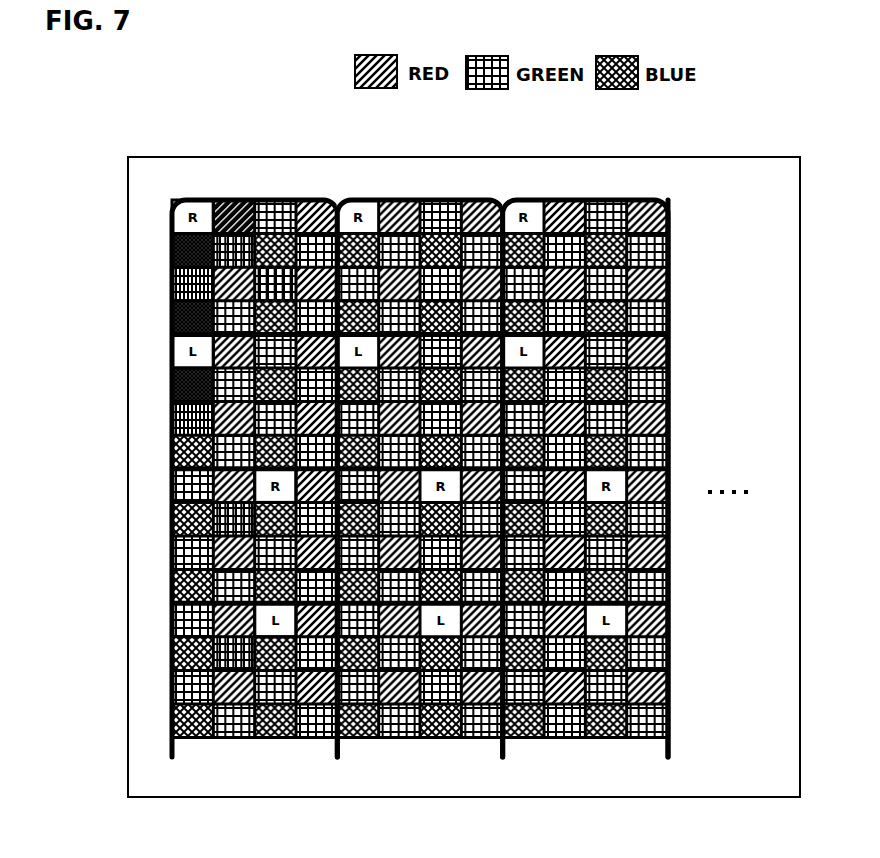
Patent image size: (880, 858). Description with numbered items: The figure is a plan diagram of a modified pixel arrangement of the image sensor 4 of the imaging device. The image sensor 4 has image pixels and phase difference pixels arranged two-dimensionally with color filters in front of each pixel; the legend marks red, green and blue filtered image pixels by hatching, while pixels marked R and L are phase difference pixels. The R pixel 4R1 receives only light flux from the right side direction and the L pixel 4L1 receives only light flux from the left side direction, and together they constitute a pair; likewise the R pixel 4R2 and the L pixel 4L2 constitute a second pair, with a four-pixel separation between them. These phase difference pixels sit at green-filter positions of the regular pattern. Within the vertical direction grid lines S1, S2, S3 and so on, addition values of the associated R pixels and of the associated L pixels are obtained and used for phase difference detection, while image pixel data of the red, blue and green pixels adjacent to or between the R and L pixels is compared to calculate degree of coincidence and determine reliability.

The image sensor 4 is at (652, 157).
The vertical direction grid line S1 is at (214, 202).
The vertical direction grid line S2 is at (382, 202).
The vertical direction grid line S3 is at (544, 202).
The R pixel 4R1 is at (173, 228).
The L pixel 4L1 is at (173, 363).
The R pixel 4R2 is at (252, 497).
The L pixel 4L2 is at (252, 630).